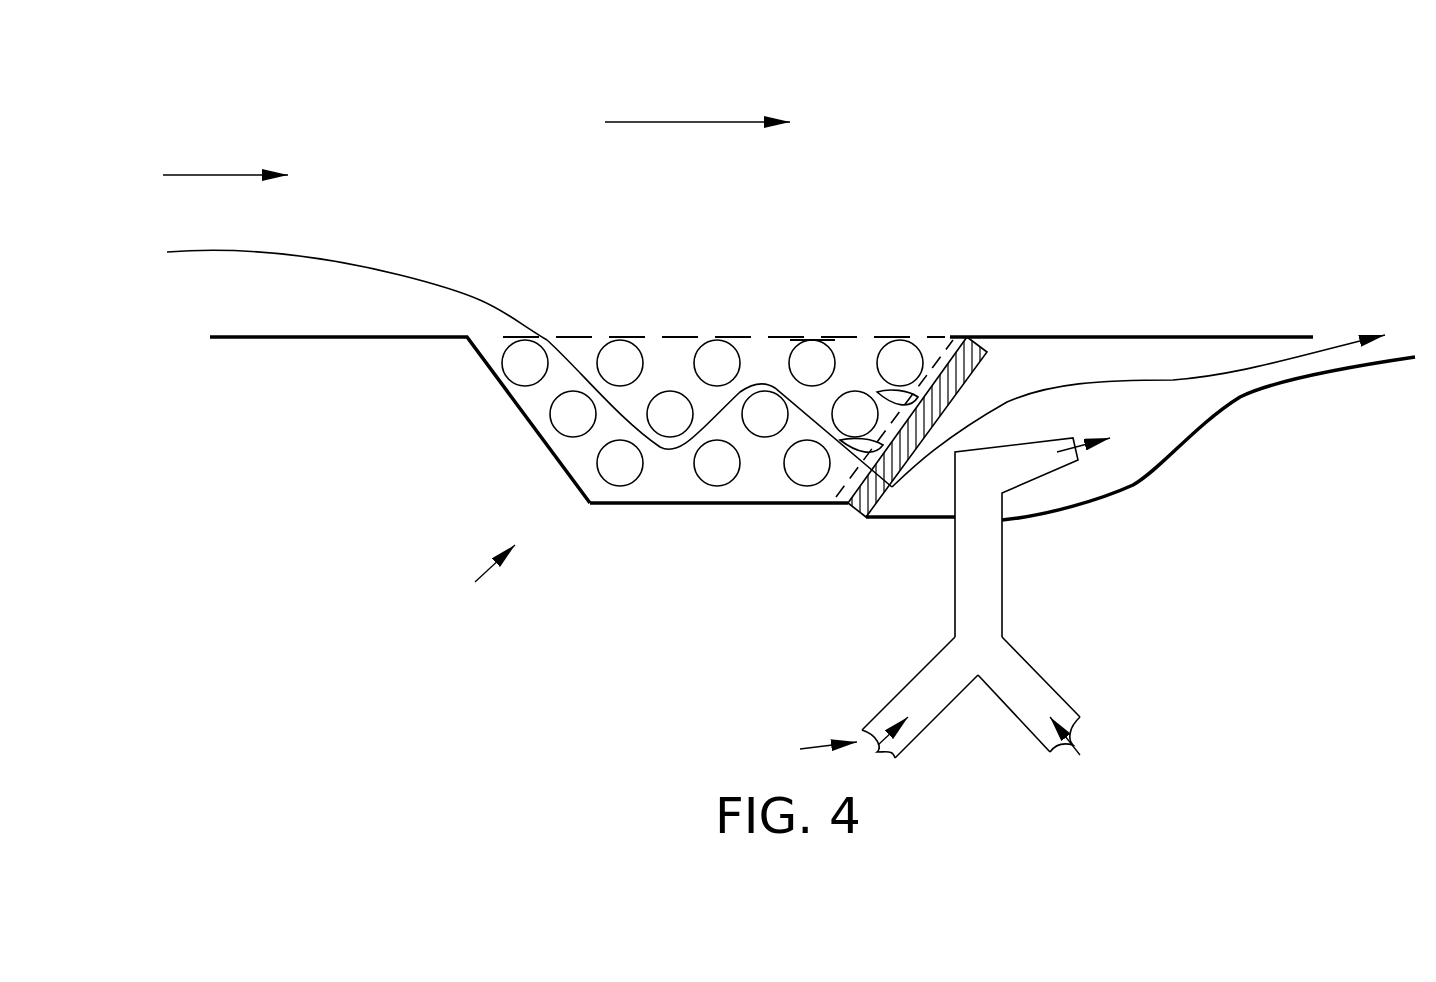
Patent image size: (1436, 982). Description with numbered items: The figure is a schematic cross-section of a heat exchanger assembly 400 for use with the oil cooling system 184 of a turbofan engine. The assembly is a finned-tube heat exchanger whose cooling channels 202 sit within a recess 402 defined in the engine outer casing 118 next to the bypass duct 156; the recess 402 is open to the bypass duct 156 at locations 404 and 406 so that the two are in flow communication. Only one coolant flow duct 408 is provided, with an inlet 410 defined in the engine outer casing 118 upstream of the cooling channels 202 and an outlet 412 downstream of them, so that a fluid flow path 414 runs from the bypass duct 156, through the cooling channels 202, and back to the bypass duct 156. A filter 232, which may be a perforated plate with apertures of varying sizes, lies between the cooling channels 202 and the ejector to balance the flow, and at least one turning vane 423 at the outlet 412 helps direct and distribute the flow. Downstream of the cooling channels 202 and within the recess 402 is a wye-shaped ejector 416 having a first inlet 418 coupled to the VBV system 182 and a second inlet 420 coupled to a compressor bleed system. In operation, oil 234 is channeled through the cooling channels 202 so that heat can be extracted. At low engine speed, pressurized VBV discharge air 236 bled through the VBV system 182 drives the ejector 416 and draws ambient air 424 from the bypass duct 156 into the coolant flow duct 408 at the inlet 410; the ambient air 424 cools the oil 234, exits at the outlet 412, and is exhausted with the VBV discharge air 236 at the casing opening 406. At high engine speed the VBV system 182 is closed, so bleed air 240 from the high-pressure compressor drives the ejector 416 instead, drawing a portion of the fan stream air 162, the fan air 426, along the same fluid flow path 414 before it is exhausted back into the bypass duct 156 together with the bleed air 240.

The engine outer casing 118 is at (342, 337).
The bypass duct 156 is at (772, 245).
The fan stream air 162 is at (698, 122).
The VBV system 182 is at (795, 751).
The oil cooling system 184 is at (466, 574).
The cooling channels 202 is at (710, 486).
The filter 232 is at (990, 338).
The oil 234 is at (808, 340).
The VBV discharge air 236 is at (877, 750).
The bleed air 240 is at (1077, 742).
The heat exchanger assembly 400 is at (1115, 165).
The recess 402 is at (998, 372).
The location 404 is at (719, 383).
The location 406 is at (1225, 398).
The coolant flow duct 408 is at (850, 375).
The inlet 410 is at (557, 338).
The outlet 412 is at (840, 498).
The fluid flow path 414 is at (352, 253).
The ejector 416 is at (1002, 578).
The first inlet 418 is at (912, 677).
The second inlet 420 is at (1050, 680).
The turning vane 423 is at (872, 445).
The ambient air 424 is at (243, 138).
The fan air 426 is at (210, 174).